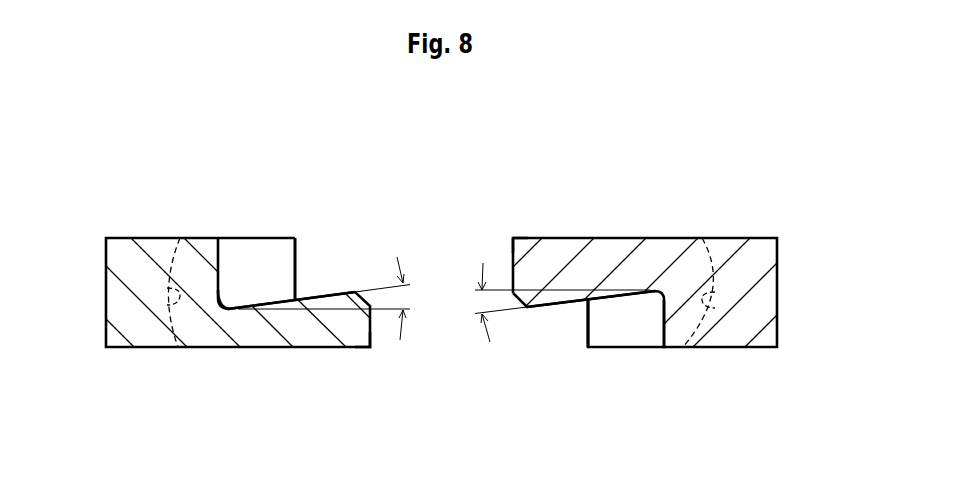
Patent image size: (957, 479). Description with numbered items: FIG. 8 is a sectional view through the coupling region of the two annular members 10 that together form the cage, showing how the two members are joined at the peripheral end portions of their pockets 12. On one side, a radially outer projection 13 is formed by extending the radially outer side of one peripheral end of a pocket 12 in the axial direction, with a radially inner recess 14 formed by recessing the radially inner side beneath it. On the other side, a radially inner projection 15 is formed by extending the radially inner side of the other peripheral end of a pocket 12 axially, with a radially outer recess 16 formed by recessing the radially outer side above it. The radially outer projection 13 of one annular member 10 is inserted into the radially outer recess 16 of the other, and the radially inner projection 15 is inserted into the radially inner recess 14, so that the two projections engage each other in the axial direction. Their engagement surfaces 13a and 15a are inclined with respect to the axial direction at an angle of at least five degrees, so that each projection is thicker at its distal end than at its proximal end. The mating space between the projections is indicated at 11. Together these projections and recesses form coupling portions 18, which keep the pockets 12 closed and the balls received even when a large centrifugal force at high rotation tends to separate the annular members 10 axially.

The annular member 10 is at (105, 258).
The projection 11 is at (295, 260).
The pocket 12 is at (177, 297).
The radially outer projection 13 is at (563, 248).
The engagement surface 13a is at (550, 310).
The radially inner recess 14 is at (652, 324).
The radially inner projection 15 is at (310, 333).
The engagement surface 15a is at (330, 288).
The radially outer recess 16 is at (220, 260).
The coupling portion 18 is at (356, 348).